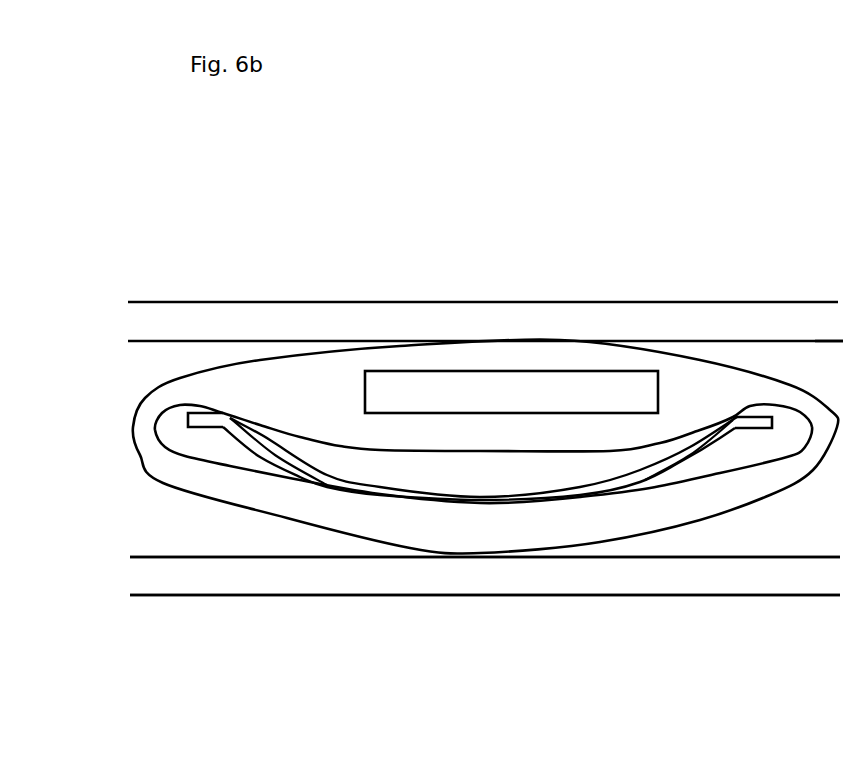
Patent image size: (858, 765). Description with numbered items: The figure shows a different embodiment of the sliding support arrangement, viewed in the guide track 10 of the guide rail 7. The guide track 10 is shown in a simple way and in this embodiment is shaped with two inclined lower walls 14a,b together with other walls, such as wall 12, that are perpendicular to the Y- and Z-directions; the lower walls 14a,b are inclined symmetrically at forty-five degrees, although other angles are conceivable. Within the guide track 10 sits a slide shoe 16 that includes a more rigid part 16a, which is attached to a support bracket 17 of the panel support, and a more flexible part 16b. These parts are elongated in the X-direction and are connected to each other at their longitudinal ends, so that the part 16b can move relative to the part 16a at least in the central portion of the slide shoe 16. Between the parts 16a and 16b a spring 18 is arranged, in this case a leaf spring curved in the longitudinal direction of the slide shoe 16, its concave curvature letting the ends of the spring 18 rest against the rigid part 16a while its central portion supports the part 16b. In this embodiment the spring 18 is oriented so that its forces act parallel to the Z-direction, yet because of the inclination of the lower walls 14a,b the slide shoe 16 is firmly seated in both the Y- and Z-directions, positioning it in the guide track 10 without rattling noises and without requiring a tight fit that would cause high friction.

The guide rail 7 is at (208, 298).
The guide track 10 is at (162, 533).
The wall 12 is at (815, 341).
The inclined lower walls 14a,b is at (243, 553).
The slide shoe 16 is at (757, 363).
The more rigid part 16a is at (317, 375).
The more flexible part 16b is at (405, 530).
The support bracket 17 is at (560, 387).
The spring 18 is at (657, 468).